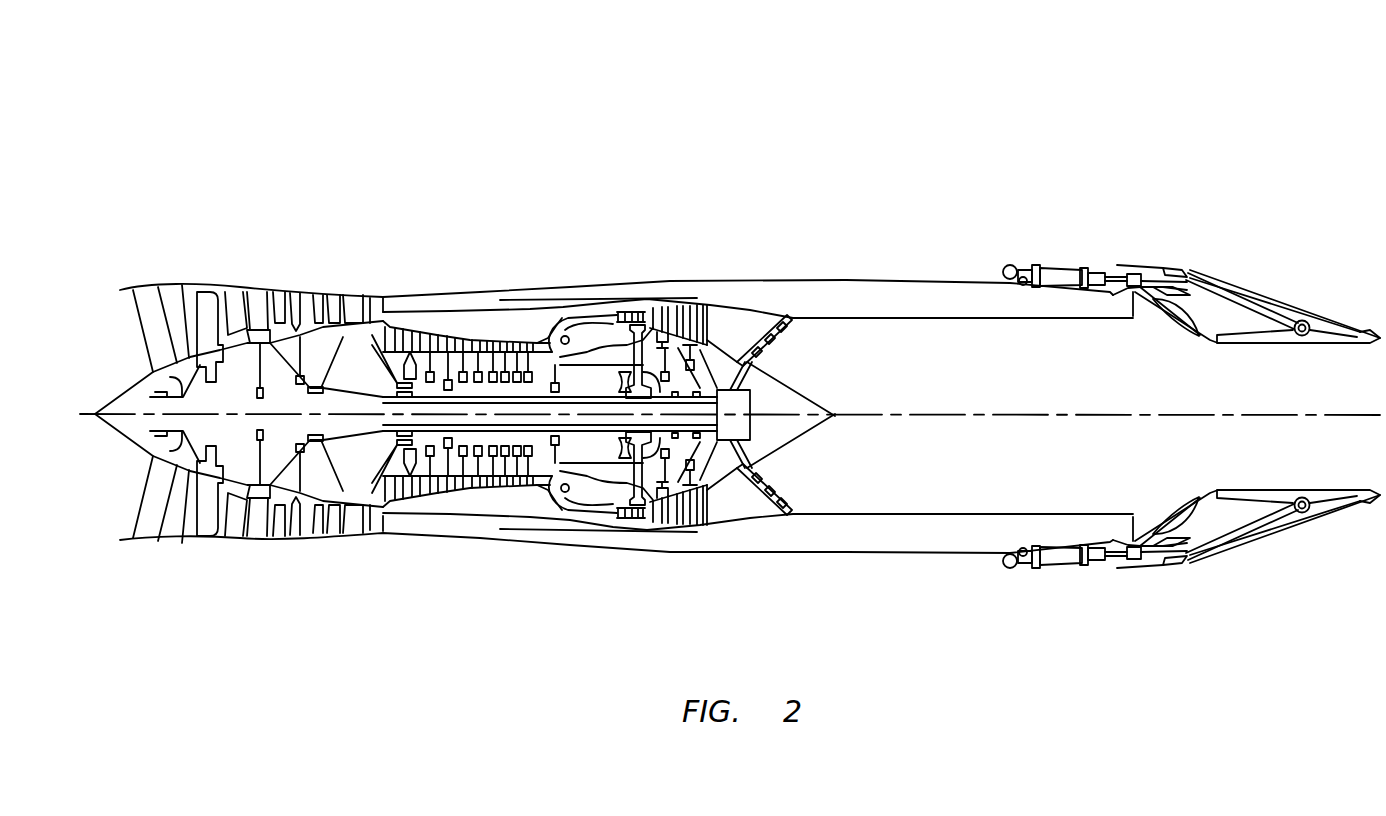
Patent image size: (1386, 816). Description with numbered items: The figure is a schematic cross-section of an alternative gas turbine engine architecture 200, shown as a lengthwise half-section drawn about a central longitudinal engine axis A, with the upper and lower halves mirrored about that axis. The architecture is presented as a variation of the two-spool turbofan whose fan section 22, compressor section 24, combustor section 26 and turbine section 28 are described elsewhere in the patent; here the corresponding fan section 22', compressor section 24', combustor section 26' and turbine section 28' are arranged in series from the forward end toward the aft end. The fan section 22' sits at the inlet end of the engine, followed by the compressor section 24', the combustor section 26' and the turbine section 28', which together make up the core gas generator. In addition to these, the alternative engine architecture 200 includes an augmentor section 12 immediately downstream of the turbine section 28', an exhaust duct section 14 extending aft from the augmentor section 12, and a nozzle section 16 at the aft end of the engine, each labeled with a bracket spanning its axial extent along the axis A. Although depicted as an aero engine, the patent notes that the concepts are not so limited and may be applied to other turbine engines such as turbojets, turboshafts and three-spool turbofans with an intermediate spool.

The alternative engine architecture 200 is at (1037, 110).
The fan section 22' is at (239, 352).
The fan section 22 is at (239, 352).
The compressor section 24' is at (528, 334).
The compressor section 24 is at (528, 334).
The combustor section 26' is at (595, 337).
The combustor section 26 is at (595, 337).
The turbine section 28' is at (677, 343).
The turbine section 28 is at (677, 343).
The augmentor section 12 is at (712, 215).
The exhaust duct section 14 is at (1125, 215).
The nozzle section 16 is at (1380, 215).
The engine central longitudinal axis A is at (1116, 415).